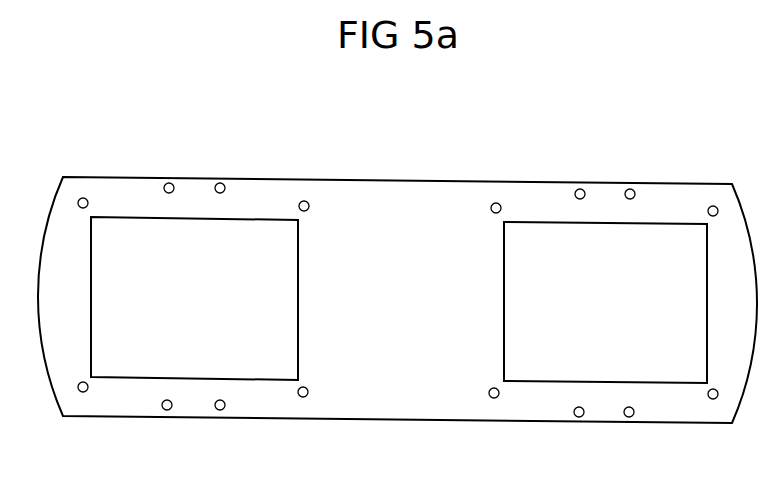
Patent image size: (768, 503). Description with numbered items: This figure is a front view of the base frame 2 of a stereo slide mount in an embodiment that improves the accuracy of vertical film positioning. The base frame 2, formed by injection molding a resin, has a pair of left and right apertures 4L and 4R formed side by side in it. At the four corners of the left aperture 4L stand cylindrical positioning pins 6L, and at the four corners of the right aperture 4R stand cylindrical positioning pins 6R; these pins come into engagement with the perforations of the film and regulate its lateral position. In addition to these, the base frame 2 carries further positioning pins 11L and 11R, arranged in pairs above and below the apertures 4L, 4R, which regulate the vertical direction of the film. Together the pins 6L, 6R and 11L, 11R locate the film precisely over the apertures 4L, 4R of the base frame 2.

The base frame 2 is at (397, 175).
The left aperture 4L is at (182, 218).
The right aperture 4R is at (707, 243).
The left positioning pins 6L is at (83, 198).
The right positioning pins 6R is at (496, 203).
The left vertical positioning pins 11L is at (218, 183).
The right vertical positioning pins 11R is at (627, 189).